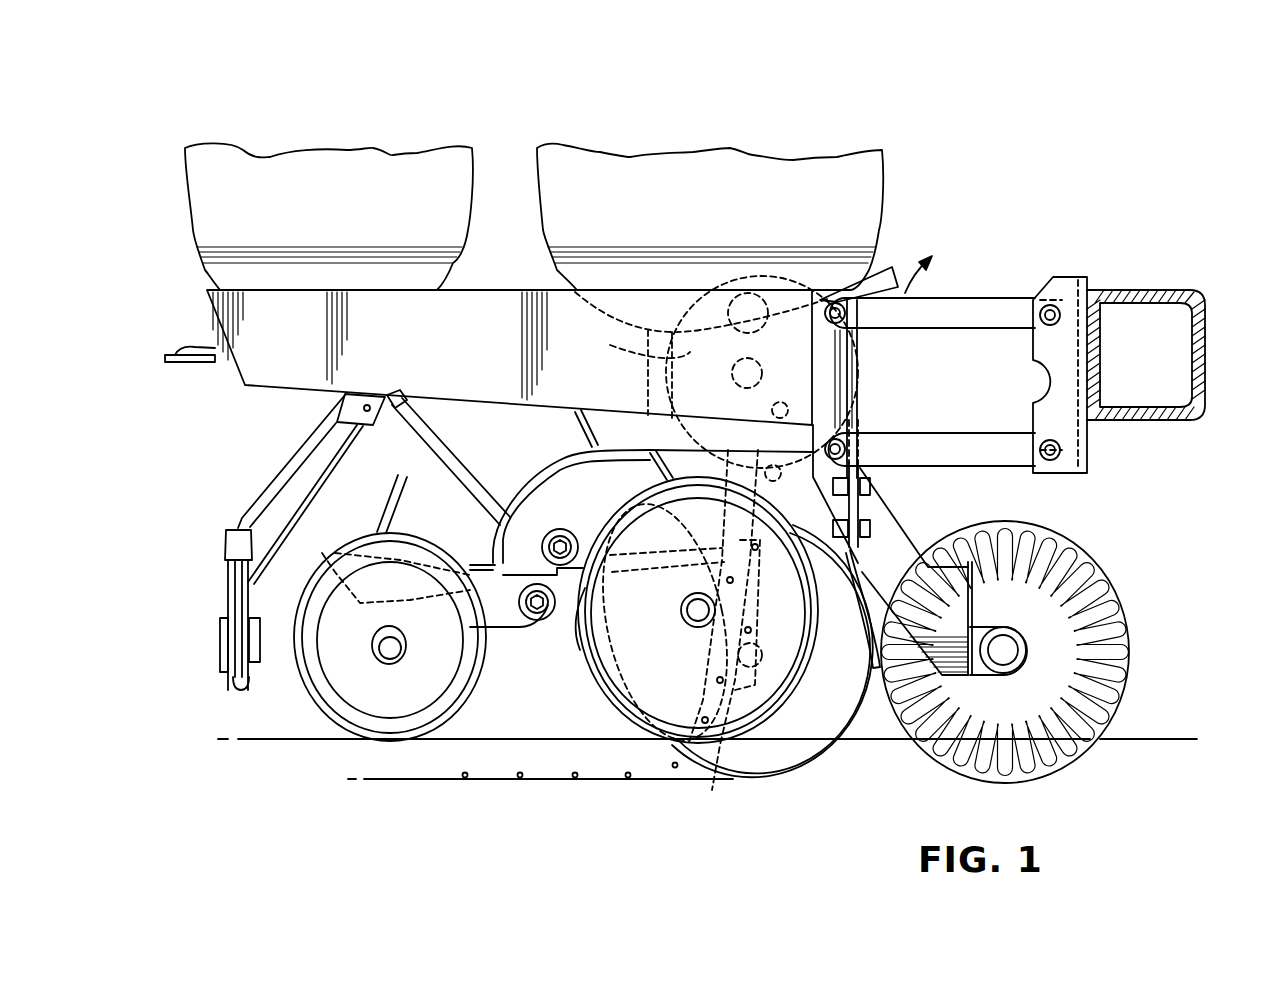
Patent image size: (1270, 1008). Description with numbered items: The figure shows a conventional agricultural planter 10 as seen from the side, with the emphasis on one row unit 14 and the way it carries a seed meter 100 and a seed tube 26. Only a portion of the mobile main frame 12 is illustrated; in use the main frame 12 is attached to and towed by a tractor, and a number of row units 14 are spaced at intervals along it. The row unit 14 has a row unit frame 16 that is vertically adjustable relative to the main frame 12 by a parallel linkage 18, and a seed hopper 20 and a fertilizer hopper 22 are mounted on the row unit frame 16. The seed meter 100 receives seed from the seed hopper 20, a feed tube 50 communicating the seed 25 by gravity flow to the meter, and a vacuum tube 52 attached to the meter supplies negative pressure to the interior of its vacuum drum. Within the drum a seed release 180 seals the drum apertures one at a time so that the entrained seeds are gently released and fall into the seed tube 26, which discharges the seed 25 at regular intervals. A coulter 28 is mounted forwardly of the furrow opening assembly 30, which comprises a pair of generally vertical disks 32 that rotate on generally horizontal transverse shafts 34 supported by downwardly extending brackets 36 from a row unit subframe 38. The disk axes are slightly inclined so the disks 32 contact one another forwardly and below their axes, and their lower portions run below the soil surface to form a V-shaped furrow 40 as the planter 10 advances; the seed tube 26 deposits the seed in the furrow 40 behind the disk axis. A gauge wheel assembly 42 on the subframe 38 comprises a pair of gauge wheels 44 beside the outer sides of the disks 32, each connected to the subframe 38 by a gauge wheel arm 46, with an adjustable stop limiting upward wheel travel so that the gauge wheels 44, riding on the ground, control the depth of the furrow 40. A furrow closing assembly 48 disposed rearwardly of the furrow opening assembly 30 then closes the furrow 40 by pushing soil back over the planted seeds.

The agricultural planter 10 is at (1118, 127).
The main frame 12 is at (1128, 292).
The row unit 14 is at (824, 132).
The row unit frame 16 is at (424, 338).
The parallel linkage 18 is at (978, 287).
The seed hopper 20 is at (673, 203).
The fertilizer hopper 22 is at (313, 203).
The seed 25 is at (628, 776).
The seed tube 26 is at (712, 650).
The coulter 28 is at (1090, 566).
The furrow opening assembly 30 is at (840, 767).
The furrow opening disk 32 is at (773, 750).
The transverse shaft 34 is at (689, 608).
The bracket 36 is at (708, 788).
The row unit subframe 38 is at (585, 495).
The furrow 40 is at (552, 760).
The gauge wheel assembly 42 is at (576, 670).
The gauge wheel 44 is at (618, 663).
The gauge wheel arm 46 is at (585, 640).
The furrow closing assembly 48 is at (417, 524).
The feed tube 50 is at (620, 332).
The vacuum tube 52 is at (881, 290).
The seed meter 100 is at (685, 360).
The seed release 180 is at (677, 425).